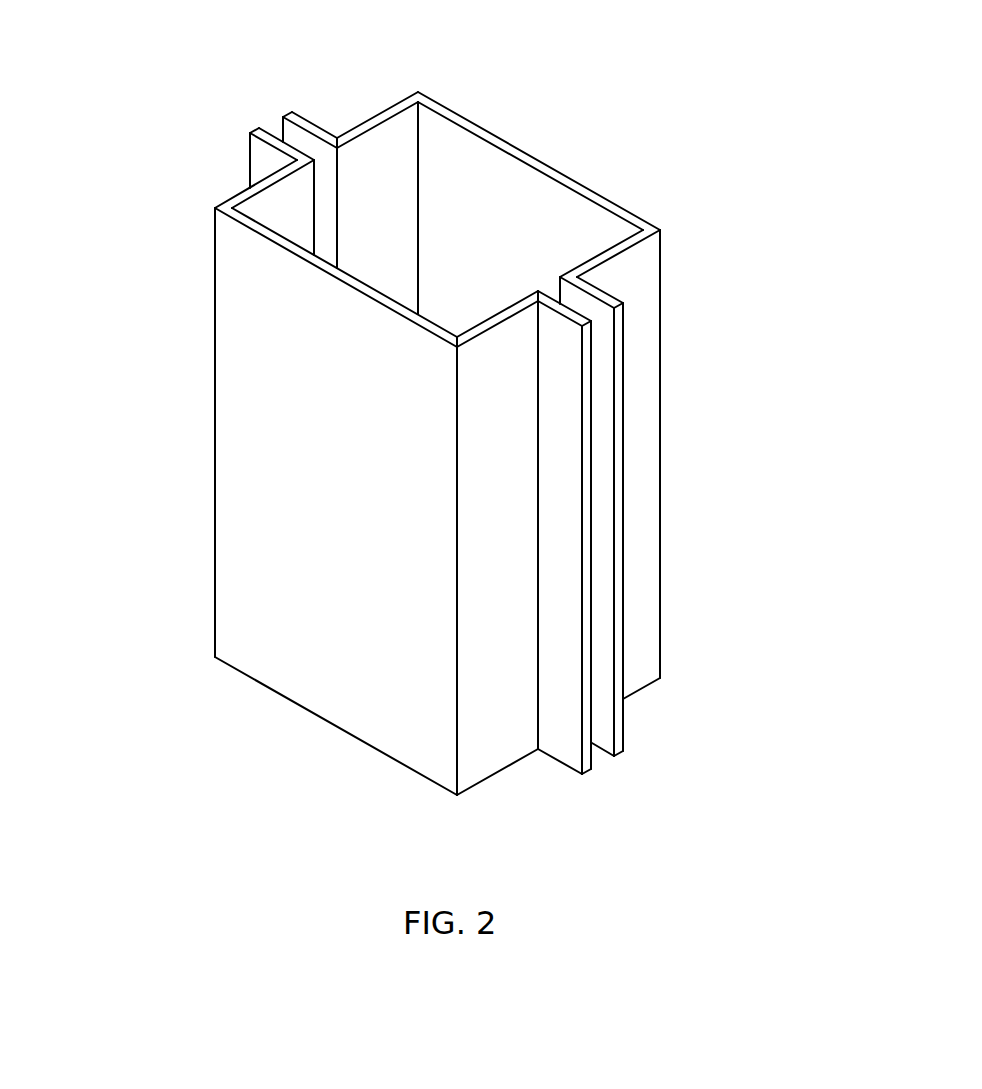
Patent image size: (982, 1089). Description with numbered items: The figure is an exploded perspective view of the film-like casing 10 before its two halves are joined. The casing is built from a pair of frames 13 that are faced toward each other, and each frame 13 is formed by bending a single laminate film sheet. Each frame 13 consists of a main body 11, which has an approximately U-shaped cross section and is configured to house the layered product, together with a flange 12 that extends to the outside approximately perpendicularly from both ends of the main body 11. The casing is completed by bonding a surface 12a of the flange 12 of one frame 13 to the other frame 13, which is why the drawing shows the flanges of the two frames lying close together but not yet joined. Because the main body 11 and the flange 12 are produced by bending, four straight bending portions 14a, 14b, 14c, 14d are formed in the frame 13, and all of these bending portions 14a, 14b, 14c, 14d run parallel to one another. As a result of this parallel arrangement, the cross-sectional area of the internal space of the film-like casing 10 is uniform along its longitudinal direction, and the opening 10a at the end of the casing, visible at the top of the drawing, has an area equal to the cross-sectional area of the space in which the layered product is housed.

The film-like casing 10 is at (592, 86).
The opening 10a is at (447, 176).
The main body 11 is at (645, 320).
The flange 12 is at (330, 136).
The surface of flange 12a is at (258, 128).
The frame 13 is at (636, 185).
The bending portion 14a is at (342, 192).
The bending portion 14b is at (421, 247).
The bending portion 14c is at (662, 560).
The bending portion 14d is at (547, 278).